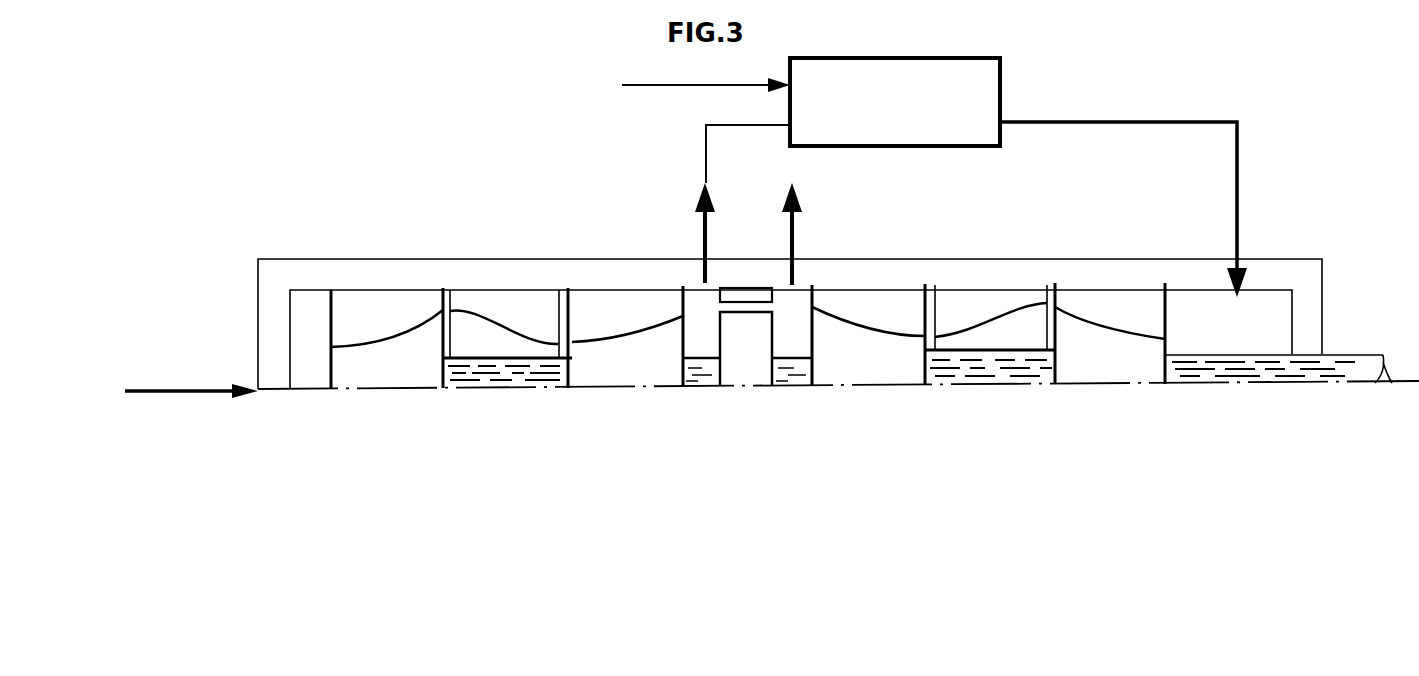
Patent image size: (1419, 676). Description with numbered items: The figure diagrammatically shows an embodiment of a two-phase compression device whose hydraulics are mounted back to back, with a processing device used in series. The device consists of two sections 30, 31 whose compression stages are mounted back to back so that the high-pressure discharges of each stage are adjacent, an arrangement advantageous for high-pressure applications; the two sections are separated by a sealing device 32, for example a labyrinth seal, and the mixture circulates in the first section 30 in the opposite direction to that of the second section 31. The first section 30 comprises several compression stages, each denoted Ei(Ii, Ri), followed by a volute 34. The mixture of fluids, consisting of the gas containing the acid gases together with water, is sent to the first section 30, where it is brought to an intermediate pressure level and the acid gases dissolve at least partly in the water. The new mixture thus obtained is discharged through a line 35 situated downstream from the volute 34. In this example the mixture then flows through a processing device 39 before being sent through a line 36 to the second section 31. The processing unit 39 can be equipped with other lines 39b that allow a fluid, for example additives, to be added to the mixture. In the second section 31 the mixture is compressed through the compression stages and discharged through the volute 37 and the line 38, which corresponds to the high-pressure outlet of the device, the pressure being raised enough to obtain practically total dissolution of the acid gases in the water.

The first section 30 is at (545, 540).
The second section 31 is at (985, 510).
The sealing device 32 is at (750, 357).
The volute 34 is at (707, 302).
The line 35 is at (700, 185).
The line 36 is at (1235, 200).
The volute 37 is at (793, 307).
The line 38 is at (797, 198).
The processing device 39 is at (902, 118).
The lines 39b is at (672, 85).
The compression stage element Ii is at (400, 372).
The compression stage element Ri is at (470, 333).